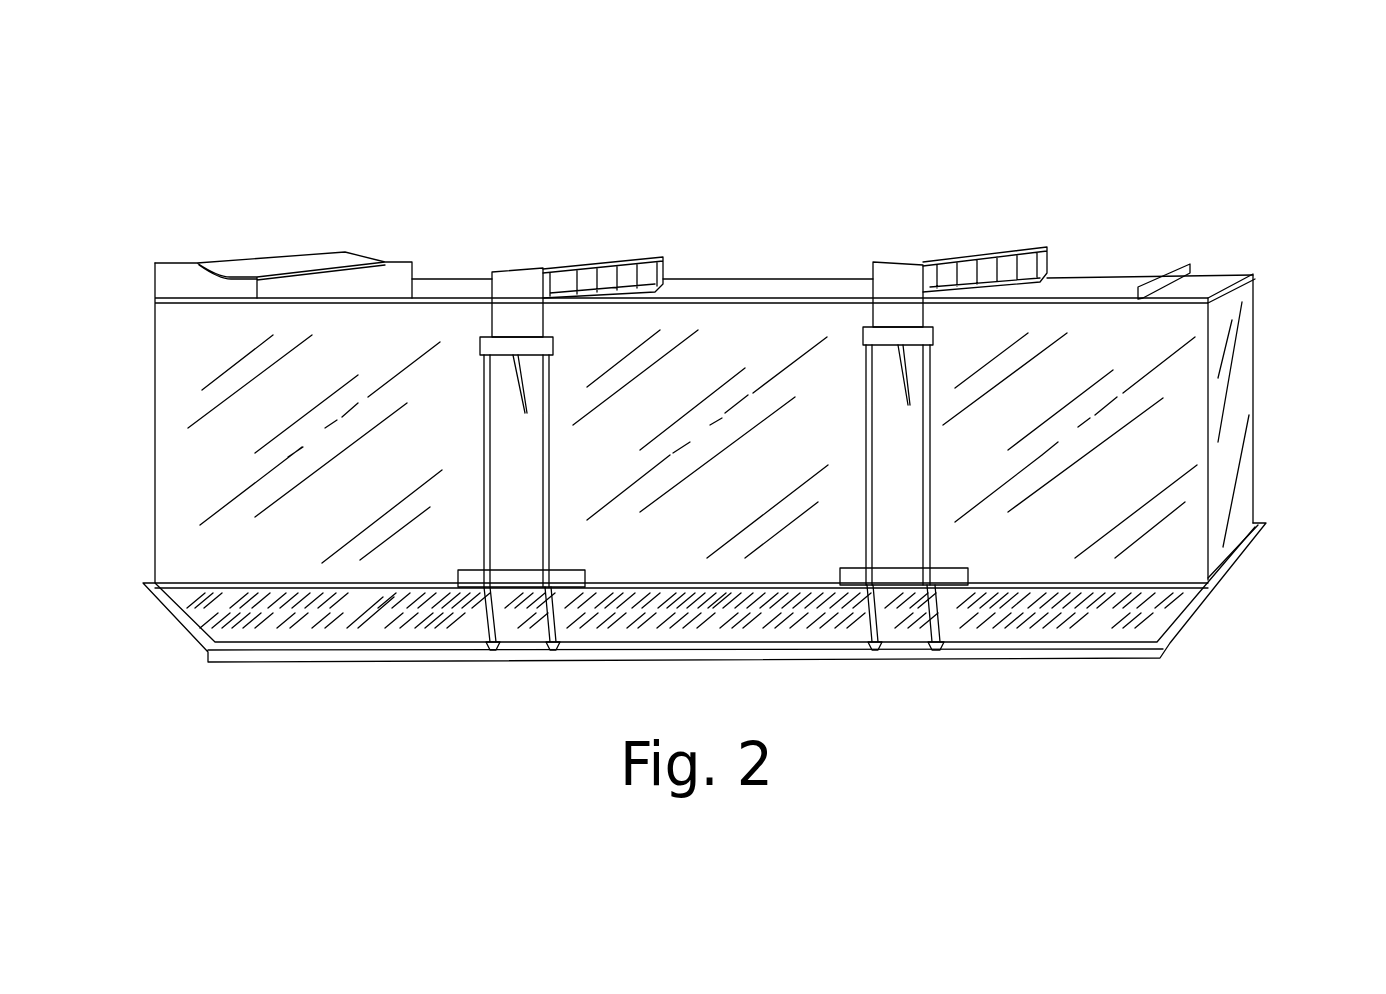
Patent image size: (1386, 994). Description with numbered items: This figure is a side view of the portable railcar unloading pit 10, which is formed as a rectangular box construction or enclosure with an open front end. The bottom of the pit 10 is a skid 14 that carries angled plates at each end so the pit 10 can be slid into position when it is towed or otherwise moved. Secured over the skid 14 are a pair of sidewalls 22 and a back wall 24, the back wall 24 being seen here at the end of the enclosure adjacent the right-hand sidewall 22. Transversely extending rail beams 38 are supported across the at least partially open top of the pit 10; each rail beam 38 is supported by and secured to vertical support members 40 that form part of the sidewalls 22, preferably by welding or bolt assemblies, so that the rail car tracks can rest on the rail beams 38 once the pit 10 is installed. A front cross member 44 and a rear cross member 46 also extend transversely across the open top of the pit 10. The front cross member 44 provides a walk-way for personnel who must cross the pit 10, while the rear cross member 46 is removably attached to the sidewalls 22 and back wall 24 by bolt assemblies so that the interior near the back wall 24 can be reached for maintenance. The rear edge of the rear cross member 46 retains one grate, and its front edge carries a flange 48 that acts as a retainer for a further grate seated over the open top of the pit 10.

The portable railcar unloading pit 10 is at (778, 162).
The skid 14 is at (312, 663).
The sidewalls 22 is at (325, 513).
The back wall 24 is at (1243, 395).
The rail beams 38 is at (505, 297).
The vertical support members 40 is at (508, 533).
The front cross member 44 is at (187, 280).
The rear cross member 46 is at (1217, 277).
The flange 48 is at (1176, 275).